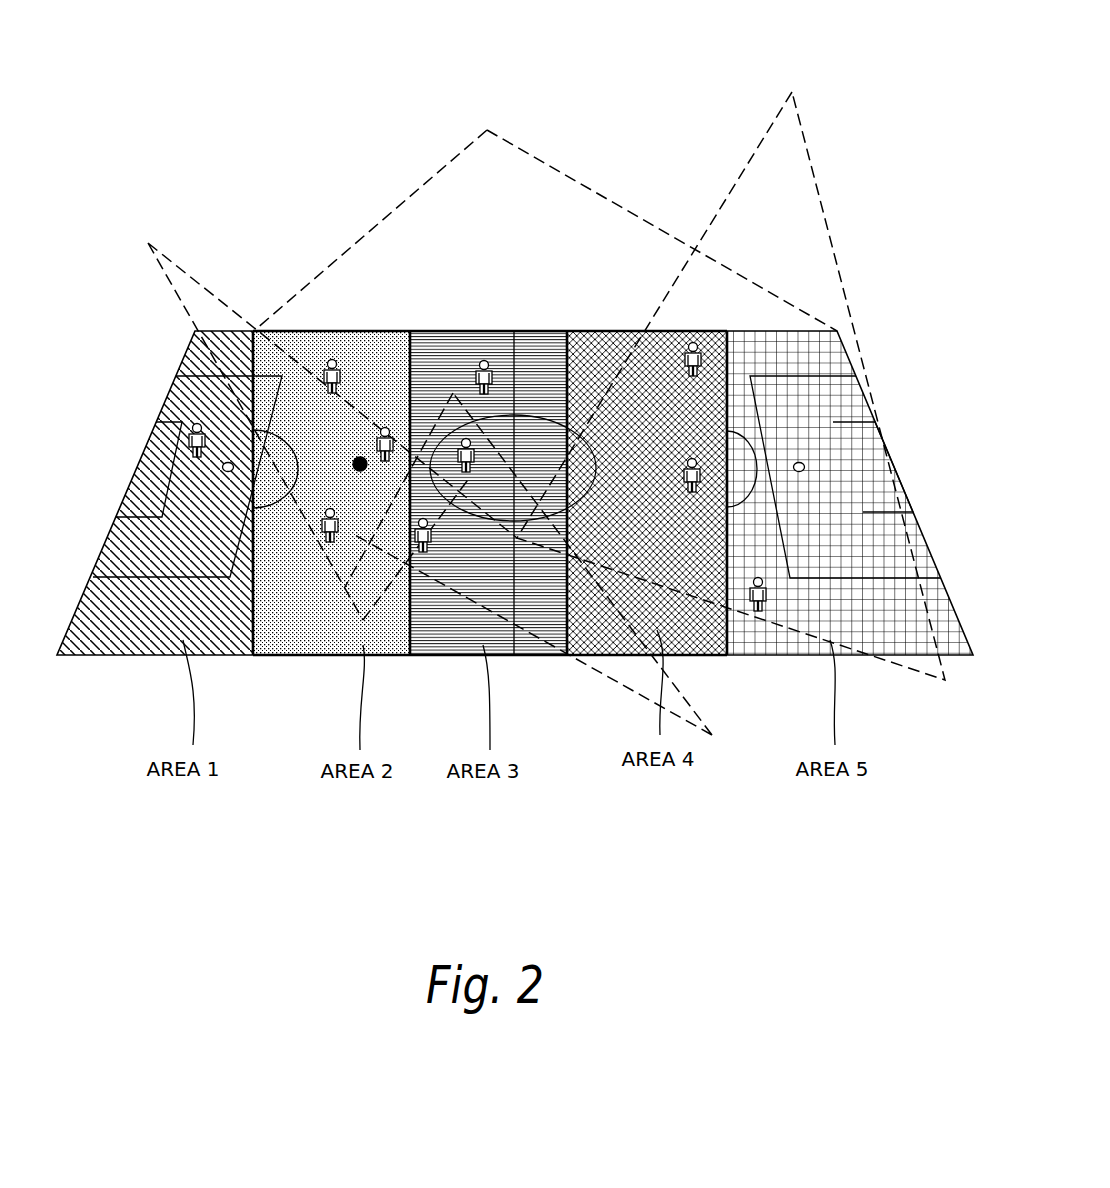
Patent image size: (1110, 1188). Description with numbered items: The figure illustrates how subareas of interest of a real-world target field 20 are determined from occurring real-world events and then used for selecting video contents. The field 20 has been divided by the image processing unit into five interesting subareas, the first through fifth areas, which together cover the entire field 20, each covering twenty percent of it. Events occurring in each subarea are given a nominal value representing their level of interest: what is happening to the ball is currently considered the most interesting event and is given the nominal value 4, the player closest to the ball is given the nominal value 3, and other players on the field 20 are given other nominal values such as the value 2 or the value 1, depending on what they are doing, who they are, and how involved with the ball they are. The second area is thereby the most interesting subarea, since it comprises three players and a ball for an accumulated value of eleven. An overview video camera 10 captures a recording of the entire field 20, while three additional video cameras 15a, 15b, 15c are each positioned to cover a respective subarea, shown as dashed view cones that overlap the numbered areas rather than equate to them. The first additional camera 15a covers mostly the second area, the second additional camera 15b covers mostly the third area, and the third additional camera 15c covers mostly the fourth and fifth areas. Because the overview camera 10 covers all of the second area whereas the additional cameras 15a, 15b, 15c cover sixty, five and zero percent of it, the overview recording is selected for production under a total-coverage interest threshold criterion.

The overview video camera 10 is at (487, 130).
The first additional video camera 15a is at (148, 243).
The second additional video camera 15b is at (712, 735).
The third additional video camera 15c is at (792, 92).
The real-world target field 20 is at (290, 330).
The nominal interest value '1' 1 is at (336, 358).
The nominal interest value '2' 2 is at (486, 360).
The nominal interest value '3' 3 is at (192, 428).
The nominal interest value '4' 4 is at (360, 457).